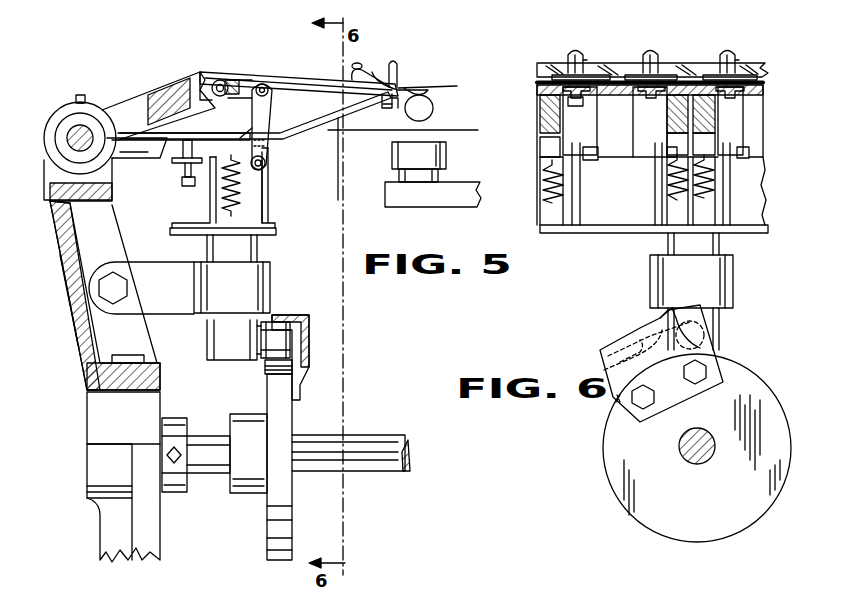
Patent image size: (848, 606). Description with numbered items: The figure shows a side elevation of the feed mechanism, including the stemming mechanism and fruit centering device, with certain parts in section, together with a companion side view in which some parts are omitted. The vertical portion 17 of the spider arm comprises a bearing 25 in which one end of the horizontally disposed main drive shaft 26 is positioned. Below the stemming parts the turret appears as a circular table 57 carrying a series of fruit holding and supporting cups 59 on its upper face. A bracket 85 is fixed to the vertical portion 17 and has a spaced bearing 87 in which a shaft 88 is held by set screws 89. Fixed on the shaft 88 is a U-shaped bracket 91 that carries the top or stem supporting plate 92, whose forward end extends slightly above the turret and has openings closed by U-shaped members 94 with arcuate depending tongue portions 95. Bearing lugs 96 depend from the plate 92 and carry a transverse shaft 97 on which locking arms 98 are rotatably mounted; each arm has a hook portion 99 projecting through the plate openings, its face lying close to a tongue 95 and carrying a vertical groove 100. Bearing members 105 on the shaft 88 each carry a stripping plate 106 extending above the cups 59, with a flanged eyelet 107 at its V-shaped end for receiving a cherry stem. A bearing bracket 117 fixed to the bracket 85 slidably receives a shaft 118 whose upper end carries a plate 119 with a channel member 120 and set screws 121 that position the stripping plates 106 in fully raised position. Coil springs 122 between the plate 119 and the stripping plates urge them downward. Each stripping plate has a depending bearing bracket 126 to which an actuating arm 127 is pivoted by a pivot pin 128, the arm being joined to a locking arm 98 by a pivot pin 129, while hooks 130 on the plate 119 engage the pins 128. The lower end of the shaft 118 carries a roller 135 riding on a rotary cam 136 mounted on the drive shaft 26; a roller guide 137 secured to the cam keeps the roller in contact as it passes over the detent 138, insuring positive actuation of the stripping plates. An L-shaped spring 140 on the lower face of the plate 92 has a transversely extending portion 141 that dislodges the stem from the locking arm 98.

In FIG. 5, the vertical portion 17 is at (156, 524).
In FIG. 5, the bearing 25 is at (96, 478).
In FIG. 5, the main drive shaft 26 is at (392, 470).
In FIG. 6, the main drive shaft 26 is at (680, 461).
In FIG. 5, the circular table 57 is at (430, 200).
In FIG. 5, the fruit holding and supporting cup 59 is at (436, 157).
In FIG. 5, the bracket 85 is at (78, 308).
In FIG. 5, the bearing 87 is at (52, 145).
In FIG. 5, the shaft 88 is at (73, 133).
In FIG. 5, the set screw 89 is at (86, 98).
In FIG. 5, the U-shaped bracket 91 is at (133, 100).
In FIG. 5, the top plate 92 is at (294, 78).
In FIG. 6, the top plate 92 is at (560, 64).
In FIG. 5, the U-shaped member 94 is at (372, 72).
In FIG. 6, the U-shaped member 94 is at (546, 77).
In FIG. 5, the depending tongue portion 95 is at (390, 104).
In FIG. 6, the depending tongue portion 95 is at (578, 100).
In FIG. 5, the bearing lug 96 is at (219, 78).
In FIG. 5, the shaft 97 is at (240, 77).
In FIG. 5, the locking arm 98 is at (380, 98).
In FIG. 5, the hook portion 99 is at (398, 70).
In FIG. 6, the hook portion 99 is at (584, 62).
In FIG. 6, the groove 100 is at (574, 50).
In FIG. 5, the bearing member 105 is at (132, 150).
In FIG. 5, the stripping plate 106 is at (297, 130).
In FIG. 6, the stripping plate 106 is at (540, 90).
In FIG. 5, the flanged eyelet 107 is at (422, 92).
In FIG. 6, the flanged eyelet 107 is at (586, 95).
In FIG. 5, the bearing bracket 117 is at (272, 287).
In FIG. 6, the bearing bracket 117 is at (732, 298).
In FIG. 5, the shaft 118 is at (258, 253).
In FIG. 6, the shaft 118 is at (720, 255).
In FIG. 5, the plate 119 is at (276, 232).
In FIG. 6, the plate 119 is at (588, 234).
In FIG. 5, the channel member 120 is at (210, 192).
In FIG. 6, the channel member 120 is at (750, 182).
In FIG. 5, the set screw 121 is at (180, 184).
In FIG. 5, the coil spring 122 is at (246, 180).
In FIG. 5, the depending bearing bracket 126 is at (247, 140).
In FIG. 6, the depending bearing bracket 126 is at (545, 149).
In FIG. 5, the actuating arm 127 is at (265, 124).
In FIG. 6, the actuating arm 127 is at (593, 135).
In FIG. 5, the pivot pin 128 is at (268, 163).
In FIG. 6, the pivot pin 128 is at (597, 160).
In FIG. 5, the pivot pin 129 is at (265, 84).
In FIG. 5, the hook 130 is at (270, 200).
In FIG. 6, the hook 130 is at (582, 204).
In FIG. 5, the roller 135 is at (286, 338).
In FIG. 5, the rotary cam 136 is at (288, 424).
In FIG. 6, the rotary cam 136 is at (715, 538).
In FIG. 5, the roller guide 137 is at (305, 365).
In FIG. 6, the roller guide 137 is at (625, 335).
In FIG. 5, the detent 138 is at (270, 361).
In FIG. 6, the detent 138 is at (618, 360).
In FIG. 5, the L-shaped spring 140 is at (352, 72).
In FIG. 5, the transversely extending portion 141 is at (385, 108).